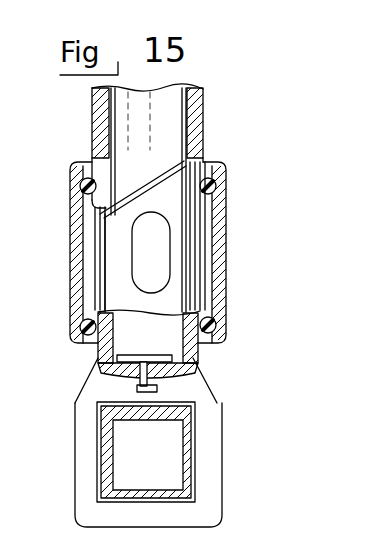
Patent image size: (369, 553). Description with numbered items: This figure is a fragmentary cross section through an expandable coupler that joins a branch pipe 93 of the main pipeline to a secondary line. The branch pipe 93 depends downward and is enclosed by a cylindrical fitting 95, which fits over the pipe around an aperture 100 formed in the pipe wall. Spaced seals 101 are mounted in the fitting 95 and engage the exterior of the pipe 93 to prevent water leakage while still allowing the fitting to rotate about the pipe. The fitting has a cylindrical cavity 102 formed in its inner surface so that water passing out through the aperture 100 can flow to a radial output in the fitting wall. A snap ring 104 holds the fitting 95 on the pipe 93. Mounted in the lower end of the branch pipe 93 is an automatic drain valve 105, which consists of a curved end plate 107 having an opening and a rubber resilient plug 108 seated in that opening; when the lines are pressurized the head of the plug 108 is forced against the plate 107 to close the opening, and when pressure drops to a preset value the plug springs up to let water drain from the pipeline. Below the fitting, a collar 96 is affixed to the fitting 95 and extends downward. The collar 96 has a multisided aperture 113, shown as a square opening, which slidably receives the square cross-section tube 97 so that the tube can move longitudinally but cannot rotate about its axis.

The branch pipe 93 is at (206, 118).
The cylindrical fitting 95 is at (224, 303).
The collar 96 is at (222, 480).
The tube 97 is at (114, 442).
The aperture 100 is at (163, 214).
The seal 101 is at (220, 184).
The cylindrical cavity 102 is at (213, 250).
The snap ring 104 is at (208, 342).
The automatic drain valve 105 is at (131, 322).
The curved end plate 107 is at (168, 372).
The rubber resilient plug 108 is at (136, 388).
The multisided aperture 113 is at (216, 400).